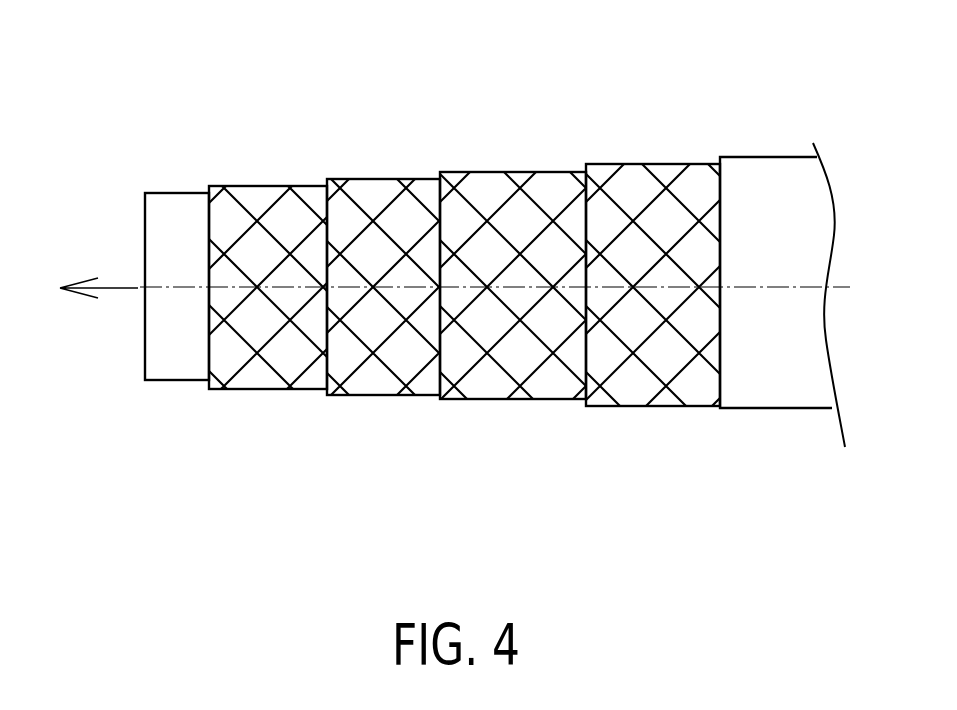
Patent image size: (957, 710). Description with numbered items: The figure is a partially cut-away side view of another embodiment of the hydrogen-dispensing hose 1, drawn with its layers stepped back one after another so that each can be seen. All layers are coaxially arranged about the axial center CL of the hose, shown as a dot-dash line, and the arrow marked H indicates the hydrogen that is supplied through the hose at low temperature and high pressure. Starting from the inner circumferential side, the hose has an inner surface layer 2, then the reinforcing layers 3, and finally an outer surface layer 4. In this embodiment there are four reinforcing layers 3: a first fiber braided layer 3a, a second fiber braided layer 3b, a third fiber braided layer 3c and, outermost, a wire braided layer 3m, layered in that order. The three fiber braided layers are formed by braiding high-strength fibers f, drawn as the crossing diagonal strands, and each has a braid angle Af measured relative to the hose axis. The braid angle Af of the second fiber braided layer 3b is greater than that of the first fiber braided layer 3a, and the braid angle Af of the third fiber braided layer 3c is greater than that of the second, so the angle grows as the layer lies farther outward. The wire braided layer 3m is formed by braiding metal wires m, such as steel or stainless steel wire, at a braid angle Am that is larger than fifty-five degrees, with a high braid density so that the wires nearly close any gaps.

The hydrogen-dispensing hose 1 is at (488, 295).
The inner surface layer 2 is at (181, 373).
The reinforcing layers 3 is at (488, 364).
The first fiber braided layer 3a is at (289, 405).
The second fiber braided layer 3b is at (404, 411).
The third fiber braided layer 3c is at (528, 415).
The wire braided layer 3m is at (666, 324).
The outer surface layer 4 is at (752, 386).
The high-strength fibers f is at (240, 235).
The metal wires m is at (673, 195).
The braid angle of fiber braided layer Af is at (268, 280).
The braid angle of wire braided layer Am is at (643, 283).
The hydrogen H is at (86, 291).
The axial center of the hose CL is at (512, 288).